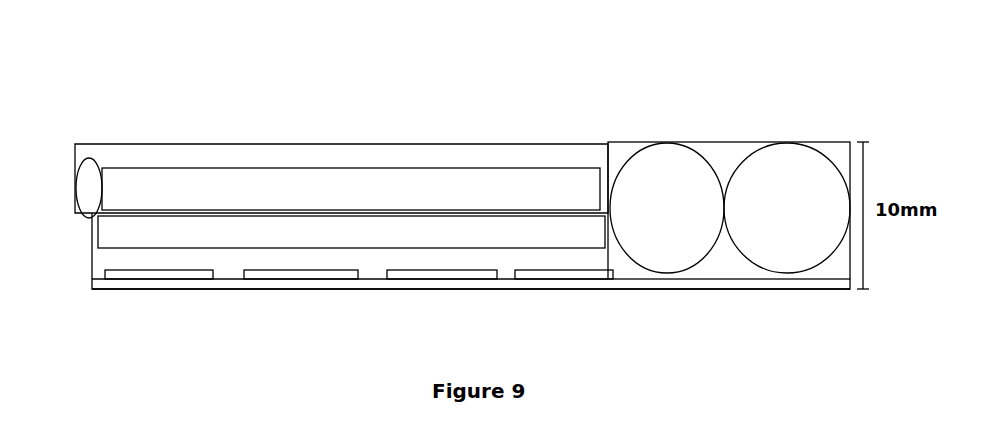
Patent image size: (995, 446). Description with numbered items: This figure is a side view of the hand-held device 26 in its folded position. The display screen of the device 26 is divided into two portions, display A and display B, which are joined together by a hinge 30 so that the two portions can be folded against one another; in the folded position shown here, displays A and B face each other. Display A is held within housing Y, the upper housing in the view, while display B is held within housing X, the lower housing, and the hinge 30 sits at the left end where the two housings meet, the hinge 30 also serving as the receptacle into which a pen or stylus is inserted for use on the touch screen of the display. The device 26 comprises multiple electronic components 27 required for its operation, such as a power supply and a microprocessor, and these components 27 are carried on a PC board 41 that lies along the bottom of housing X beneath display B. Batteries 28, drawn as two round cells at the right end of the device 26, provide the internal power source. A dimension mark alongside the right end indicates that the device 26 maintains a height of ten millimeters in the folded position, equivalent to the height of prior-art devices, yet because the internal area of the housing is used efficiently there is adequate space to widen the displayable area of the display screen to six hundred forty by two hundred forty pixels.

The housing Y is at (193, 150).
The housing X is at (102, 262).
The display screen portion A is at (282, 178).
The display screen portion B is at (115, 239).
The hinge 30 is at (89, 157).
The device 26 is at (702, 142).
The batteries 28 is at (770, 267).
The electronic components 27 is at (178, 280).
The PC board 41 is at (112, 285).